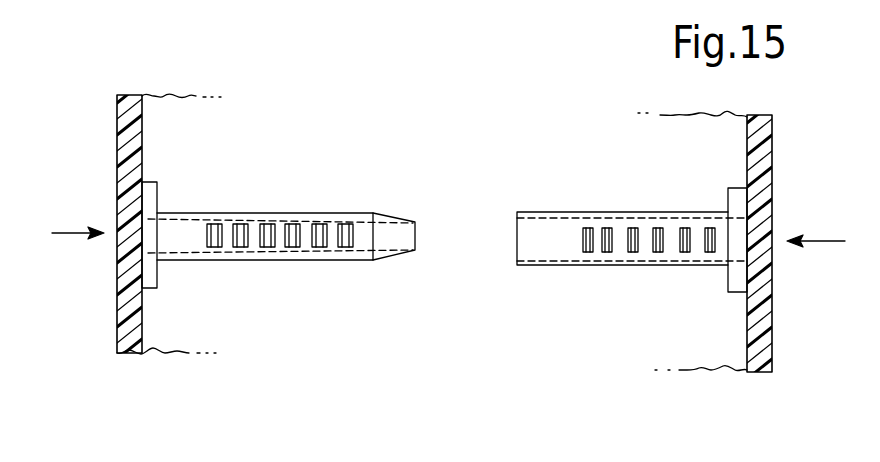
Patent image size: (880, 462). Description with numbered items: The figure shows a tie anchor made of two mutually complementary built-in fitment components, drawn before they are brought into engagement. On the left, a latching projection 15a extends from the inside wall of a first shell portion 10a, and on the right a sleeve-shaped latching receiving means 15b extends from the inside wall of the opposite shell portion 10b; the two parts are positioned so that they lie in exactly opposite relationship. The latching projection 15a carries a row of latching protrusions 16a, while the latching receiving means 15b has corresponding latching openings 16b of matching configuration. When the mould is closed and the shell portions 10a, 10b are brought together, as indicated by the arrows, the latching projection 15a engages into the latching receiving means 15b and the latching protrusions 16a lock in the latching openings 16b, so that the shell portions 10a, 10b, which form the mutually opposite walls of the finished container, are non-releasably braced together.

The shell portion 10a is at (135, 333).
The shell portion 10b is at (759, 356).
The latching projection 15a is at (366, 228).
The latching receiving means 15b is at (542, 223).
The latching protrusions 16a is at (294, 227).
The latching openings 16b is at (613, 249).